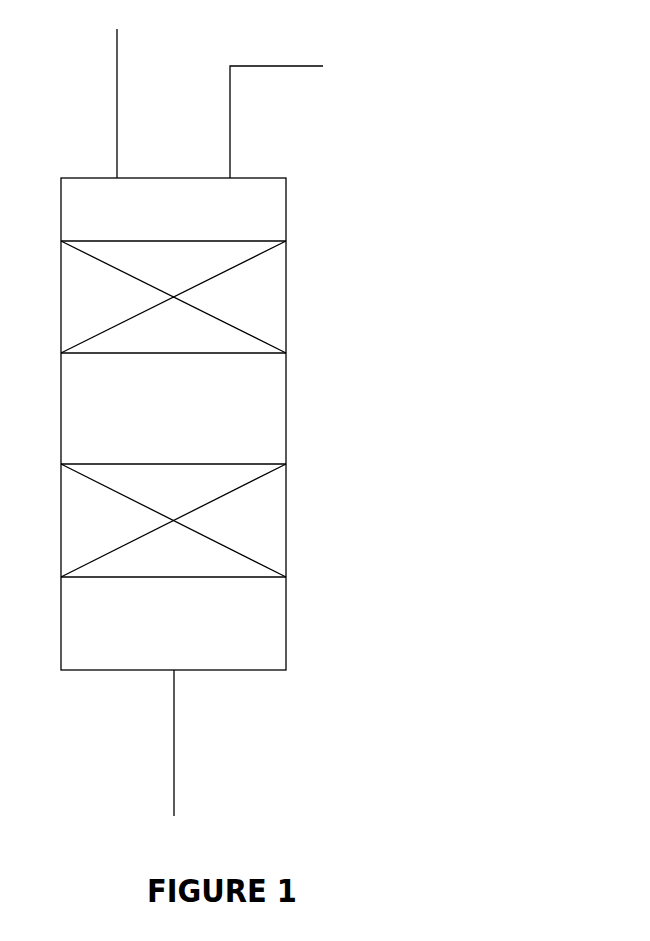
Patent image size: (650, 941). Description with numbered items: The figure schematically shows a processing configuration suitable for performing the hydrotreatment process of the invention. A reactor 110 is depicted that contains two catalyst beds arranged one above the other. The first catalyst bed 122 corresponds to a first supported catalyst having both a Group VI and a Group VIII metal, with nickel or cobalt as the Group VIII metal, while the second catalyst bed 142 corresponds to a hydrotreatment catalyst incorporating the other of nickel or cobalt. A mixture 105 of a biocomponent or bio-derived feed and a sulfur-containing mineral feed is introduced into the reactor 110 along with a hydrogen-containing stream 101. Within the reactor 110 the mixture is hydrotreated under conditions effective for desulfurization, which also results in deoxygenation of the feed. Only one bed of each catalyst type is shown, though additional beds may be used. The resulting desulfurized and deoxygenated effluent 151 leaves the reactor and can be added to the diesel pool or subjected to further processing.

The hydrogen-containing stream 101 is at (239, 143).
The mixture 105 is at (98, 142).
The reactor 110 is at (145, 416).
The first catalyst bed 122 is at (298, 318).
The second catalyst bed 142 is at (297, 537).
The effluent 151 is at (203, 756).